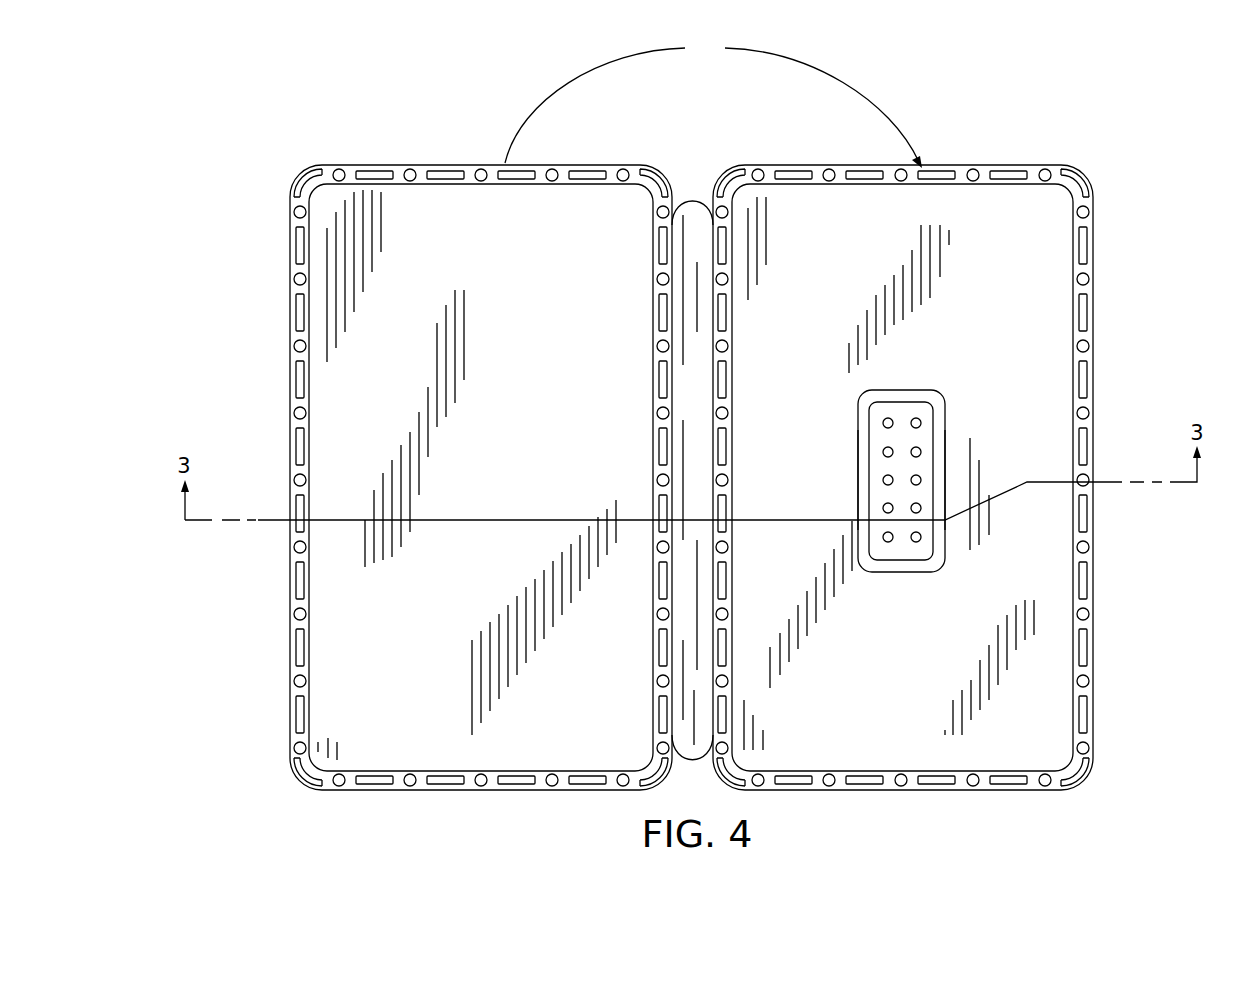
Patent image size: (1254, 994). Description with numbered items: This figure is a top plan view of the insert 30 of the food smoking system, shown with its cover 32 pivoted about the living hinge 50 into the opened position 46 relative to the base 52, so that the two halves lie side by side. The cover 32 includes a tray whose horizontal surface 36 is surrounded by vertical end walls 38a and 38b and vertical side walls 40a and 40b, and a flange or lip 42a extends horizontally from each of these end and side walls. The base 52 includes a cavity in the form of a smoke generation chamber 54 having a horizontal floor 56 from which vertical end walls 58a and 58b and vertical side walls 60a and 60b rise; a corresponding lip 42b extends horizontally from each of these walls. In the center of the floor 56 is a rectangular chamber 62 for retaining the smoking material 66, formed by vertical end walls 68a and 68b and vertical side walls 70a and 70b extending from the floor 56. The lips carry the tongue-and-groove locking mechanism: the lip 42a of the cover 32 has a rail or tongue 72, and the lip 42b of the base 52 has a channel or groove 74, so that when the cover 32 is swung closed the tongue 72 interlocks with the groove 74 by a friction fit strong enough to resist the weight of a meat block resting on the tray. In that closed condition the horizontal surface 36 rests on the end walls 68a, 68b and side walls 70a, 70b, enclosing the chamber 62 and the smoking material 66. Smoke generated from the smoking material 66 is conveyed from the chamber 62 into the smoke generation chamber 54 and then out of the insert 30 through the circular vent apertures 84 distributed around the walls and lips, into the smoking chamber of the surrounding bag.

The insert 30 is at (1139, 122).
The cover 32 is at (260, 150).
The horizontal surface 36 is at (472, 494).
The vertical end wall 38a is at (470, 186).
The vertical end wall 38b is at (468, 778).
The vertical side wall 40a is at (314, 441).
The vertical side wall 40b is at (655, 445).
The lip 42a is at (300, 437).
The lip 42b is at (1095, 405).
The opened position 46 is at (713, 102).
The living hinge 50 is at (692, 205).
The base 52 is at (1122, 205).
The smoke generation chamber 54 is at (829, 752).
The floor 56 is at (891, 654).
The vertical end wall 58a is at (900, 186).
The vertical end wall 58b is at (928, 773).
The vertical side wall 60a is at (730, 446).
The vertical side wall 60b is at (1075, 447).
The chamber 62 is at (880, 434).
The smoking material 66 is at (918, 452).
The vertical end wall 68a is at (905, 390).
The vertical end wall 68b is at (905, 572).
The vertical side wall 70a is at (858, 468).
The vertical side wall 70b is at (945, 470).
The tongue 72 is at (298, 232).
The groove 74 is at (783, 170).
The apertures 84 is at (410, 173).